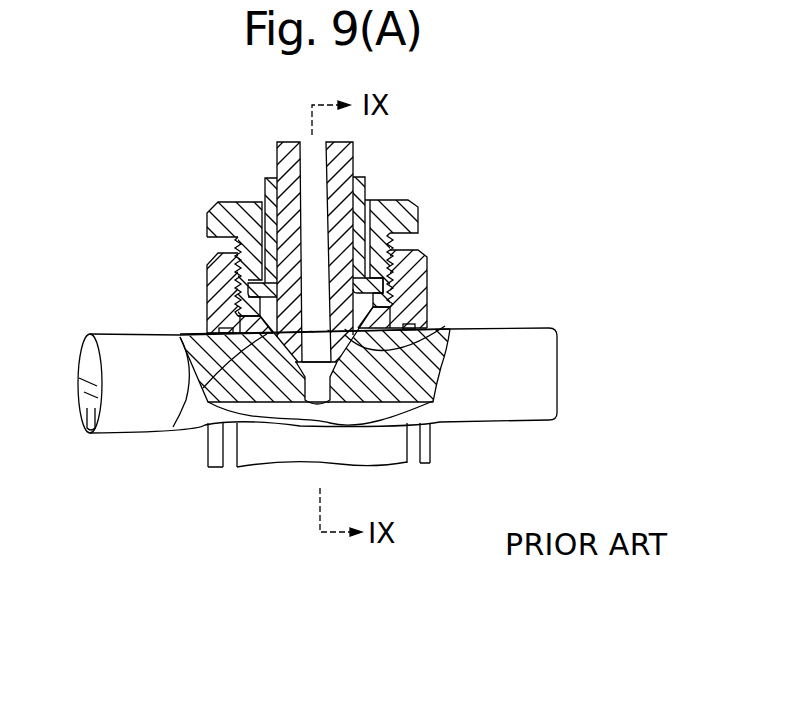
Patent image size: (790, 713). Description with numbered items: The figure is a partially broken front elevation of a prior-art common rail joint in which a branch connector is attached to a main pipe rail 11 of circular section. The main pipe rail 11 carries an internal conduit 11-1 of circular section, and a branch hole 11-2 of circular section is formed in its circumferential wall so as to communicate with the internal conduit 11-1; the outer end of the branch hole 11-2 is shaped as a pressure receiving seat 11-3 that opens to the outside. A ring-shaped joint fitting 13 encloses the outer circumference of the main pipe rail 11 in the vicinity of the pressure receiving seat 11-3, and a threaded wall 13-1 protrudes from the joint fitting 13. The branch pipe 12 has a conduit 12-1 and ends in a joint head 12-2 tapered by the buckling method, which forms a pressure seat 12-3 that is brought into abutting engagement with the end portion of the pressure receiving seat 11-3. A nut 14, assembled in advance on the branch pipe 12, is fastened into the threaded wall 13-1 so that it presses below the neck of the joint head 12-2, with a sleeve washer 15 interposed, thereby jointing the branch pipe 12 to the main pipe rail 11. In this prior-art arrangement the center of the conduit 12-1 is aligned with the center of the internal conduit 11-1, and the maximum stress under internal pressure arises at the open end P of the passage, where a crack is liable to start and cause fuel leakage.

The main pipe rail 11 is at (143, 403).
The internal conduit 11-1 is at (277, 417).
The branch hole 11-2 is at (320, 407).
The pressure receiving seat 11-3 is at (434, 330).
The open end P is at (303, 405).
The branch pipe 12 is at (354, 151).
The conduit 12-1 is at (299, 168).
The joint head 12-2 is at (393, 306).
The pressure seat 12-3 is at (205, 392).
The joint fitting 13 is at (383, 440).
The threaded wall 13-1 is at (218, 300).
The nut 14 is at (407, 217).
The sleeve washer 15 is at (265, 187).